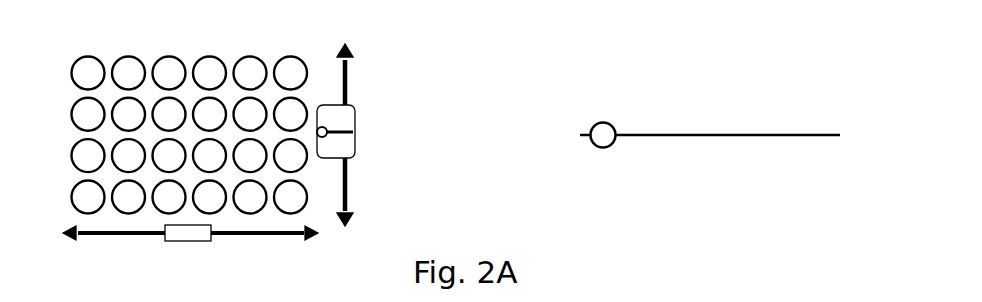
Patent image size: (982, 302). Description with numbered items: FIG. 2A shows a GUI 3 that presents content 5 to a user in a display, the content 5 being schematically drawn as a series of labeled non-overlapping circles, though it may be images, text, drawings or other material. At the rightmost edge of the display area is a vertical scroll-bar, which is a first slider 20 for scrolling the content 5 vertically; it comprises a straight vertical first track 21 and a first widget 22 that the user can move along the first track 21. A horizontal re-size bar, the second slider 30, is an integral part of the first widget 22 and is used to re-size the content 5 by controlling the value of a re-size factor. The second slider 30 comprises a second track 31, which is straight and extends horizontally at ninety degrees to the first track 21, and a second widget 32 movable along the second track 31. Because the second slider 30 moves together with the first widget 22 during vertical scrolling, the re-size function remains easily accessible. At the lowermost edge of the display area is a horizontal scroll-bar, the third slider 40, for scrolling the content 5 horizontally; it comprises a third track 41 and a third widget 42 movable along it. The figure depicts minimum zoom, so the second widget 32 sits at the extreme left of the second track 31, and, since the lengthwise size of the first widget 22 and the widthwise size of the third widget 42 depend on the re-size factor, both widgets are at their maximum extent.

The GUI 3 is at (156, 107).
The content 5 is at (215, 44).
The first slider 20 is at (386, 113).
The first track 21 is at (350, 85).
The first widget 22 is at (349, 166).
The second slider 30 is at (572, 107).
The second track 31 is at (355, 145).
The second widget 32 is at (322, 138).
The third slider 40 is at (190, 256).
The third track 41 is at (256, 236).
The third widget 42 is at (188, 241).